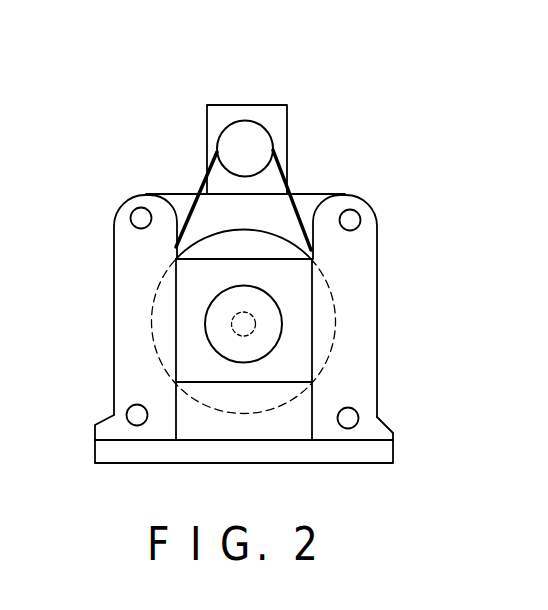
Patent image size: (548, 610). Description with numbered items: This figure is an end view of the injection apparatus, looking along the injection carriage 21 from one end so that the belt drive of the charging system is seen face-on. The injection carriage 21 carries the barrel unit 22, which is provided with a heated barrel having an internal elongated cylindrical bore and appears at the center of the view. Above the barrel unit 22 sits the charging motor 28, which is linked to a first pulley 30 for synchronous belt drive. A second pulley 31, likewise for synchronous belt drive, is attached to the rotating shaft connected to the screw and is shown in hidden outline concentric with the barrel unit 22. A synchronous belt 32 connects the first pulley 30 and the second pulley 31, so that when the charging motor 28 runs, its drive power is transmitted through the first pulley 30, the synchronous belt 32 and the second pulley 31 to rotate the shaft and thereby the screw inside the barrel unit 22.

The injection carriage 21 is at (381, 232).
The barrel unit 22 is at (282, 325).
The charging motor 28 is at (210, 108).
The first pulley 30 is at (258, 139).
The second pulley 31 is at (153, 328).
The synchronous belt 32 is at (298, 213).